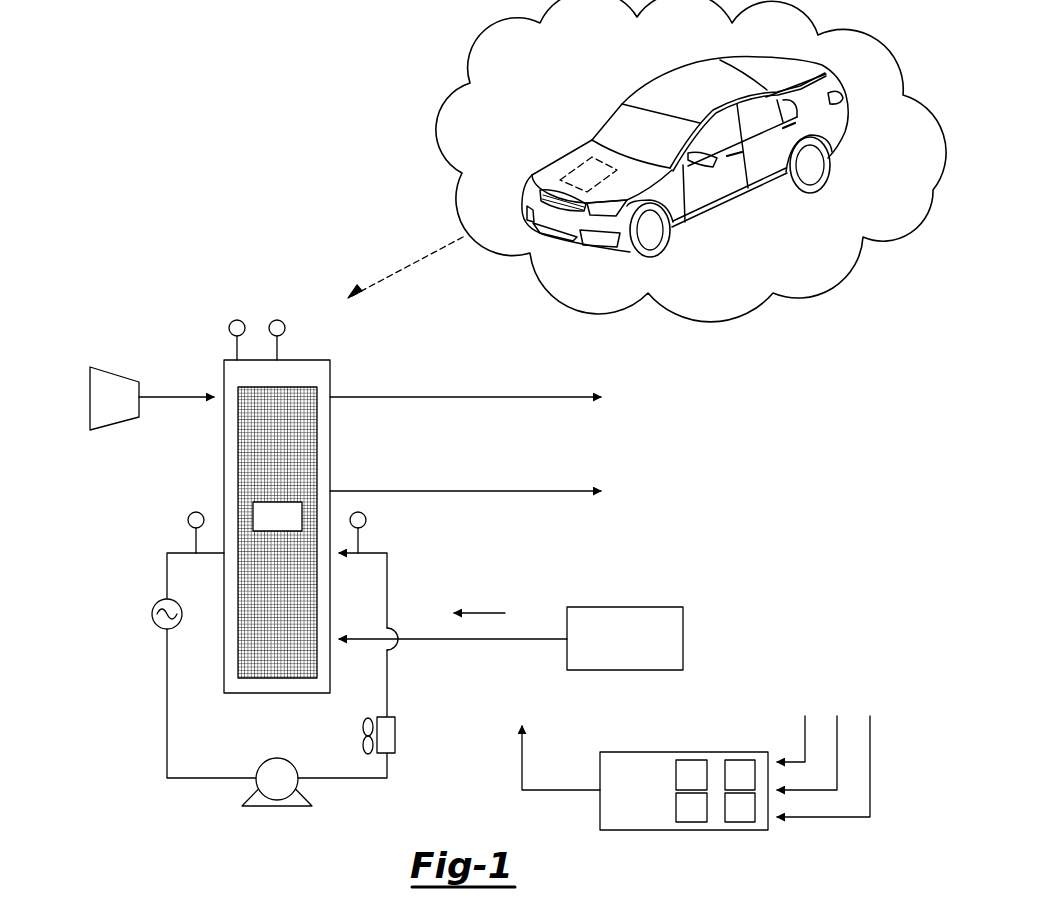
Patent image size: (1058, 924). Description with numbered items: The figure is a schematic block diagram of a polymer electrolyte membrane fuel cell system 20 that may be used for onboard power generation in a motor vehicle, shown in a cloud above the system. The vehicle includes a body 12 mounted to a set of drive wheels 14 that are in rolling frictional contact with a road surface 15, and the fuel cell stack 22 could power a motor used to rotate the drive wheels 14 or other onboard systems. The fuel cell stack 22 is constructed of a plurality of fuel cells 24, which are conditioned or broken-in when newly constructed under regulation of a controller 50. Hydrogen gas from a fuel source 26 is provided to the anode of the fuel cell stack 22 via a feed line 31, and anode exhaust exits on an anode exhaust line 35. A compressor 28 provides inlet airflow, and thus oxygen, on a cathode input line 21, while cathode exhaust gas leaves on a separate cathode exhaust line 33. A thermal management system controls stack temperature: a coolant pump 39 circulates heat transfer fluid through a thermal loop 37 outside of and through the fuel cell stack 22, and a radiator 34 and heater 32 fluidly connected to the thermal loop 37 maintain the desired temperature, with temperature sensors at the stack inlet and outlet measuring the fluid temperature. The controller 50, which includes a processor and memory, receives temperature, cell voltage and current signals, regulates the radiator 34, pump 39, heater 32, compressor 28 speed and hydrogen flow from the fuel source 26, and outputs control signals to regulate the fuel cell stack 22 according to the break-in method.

The body 12 is at (724, 176).
The drive wheels 14 is at (812, 192).
The road surface 15 is at (771, 258).
The PEM fuel cell system 20 is at (588, 174).
The cathode input line 21 is at (172, 400).
The fuel cell stack 22 is at (304, 489).
The fuel cells 24 is at (305, 447).
The fuel source 26 is at (683, 638).
The compressor 28 is at (118, 367).
The feed line 31 is at (488, 640).
The heater 32 is at (152, 614).
The cathode exhaust line 33 is at (462, 395).
The radiator 34 is at (396, 735).
The anode exhaust line 35 is at (462, 489).
The thermal loop 37 is at (132, 822).
The coolant pump 39 is at (277, 757).
The controller 50 is at (600, 818).